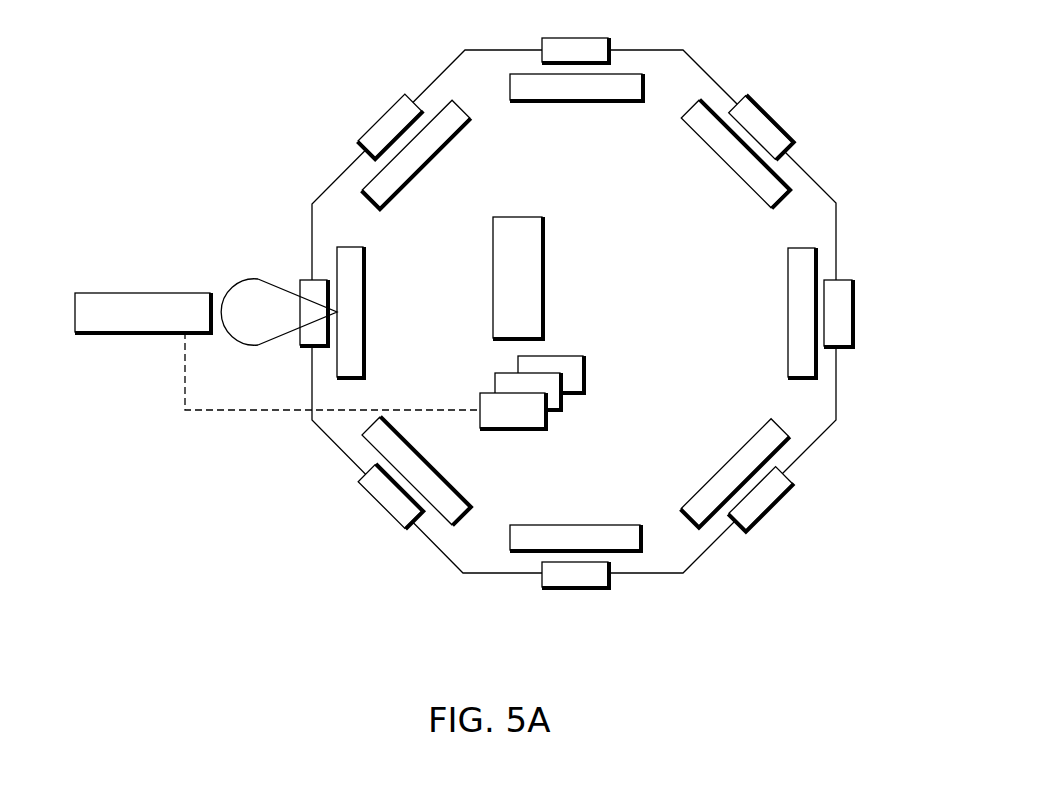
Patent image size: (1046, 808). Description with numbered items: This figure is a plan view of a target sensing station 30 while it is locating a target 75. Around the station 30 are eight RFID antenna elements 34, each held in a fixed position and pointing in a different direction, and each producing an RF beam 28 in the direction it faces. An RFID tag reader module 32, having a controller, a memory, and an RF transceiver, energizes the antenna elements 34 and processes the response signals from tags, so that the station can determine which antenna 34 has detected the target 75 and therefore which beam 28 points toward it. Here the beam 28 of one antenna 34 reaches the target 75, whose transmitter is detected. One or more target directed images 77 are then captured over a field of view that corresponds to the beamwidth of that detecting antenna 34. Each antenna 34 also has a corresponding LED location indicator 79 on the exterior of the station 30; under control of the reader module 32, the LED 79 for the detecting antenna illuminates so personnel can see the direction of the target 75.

The RF beam 28 is at (273, 324).
The target sensing station 30 is at (589, 324).
The RFID tag reader module 32 is at (493, 276).
The RFID antenna element 34 is at (428, 163).
The target 75 is at (98, 335).
The target directed image 77 is at (584, 377).
The LED location indicator 79 is at (360, 142).